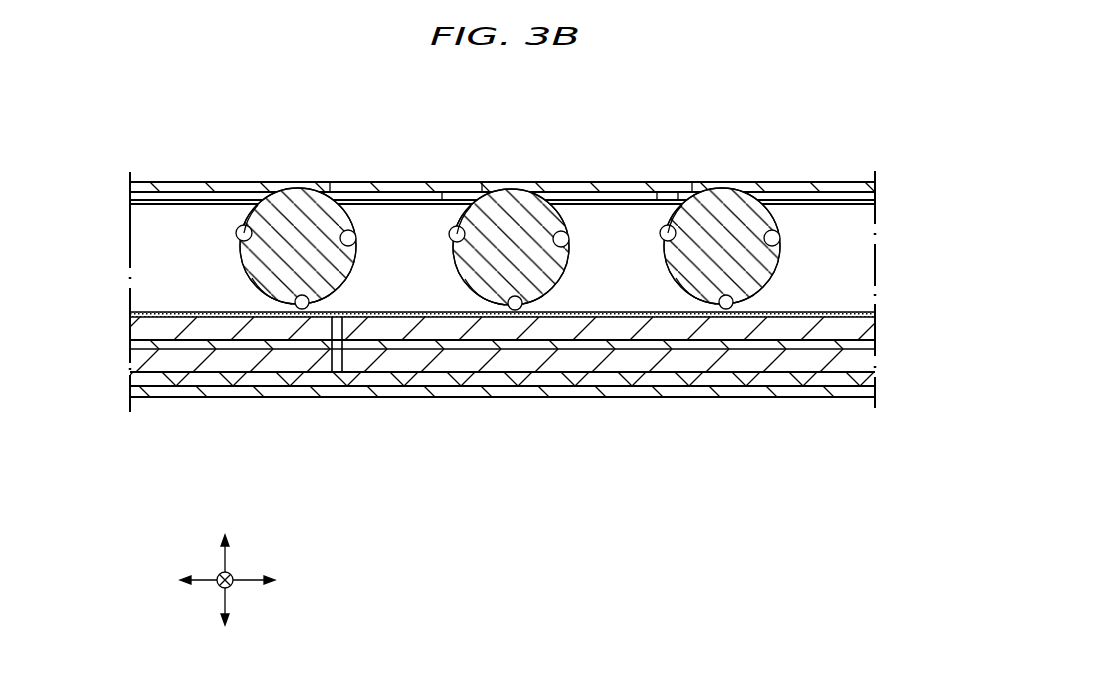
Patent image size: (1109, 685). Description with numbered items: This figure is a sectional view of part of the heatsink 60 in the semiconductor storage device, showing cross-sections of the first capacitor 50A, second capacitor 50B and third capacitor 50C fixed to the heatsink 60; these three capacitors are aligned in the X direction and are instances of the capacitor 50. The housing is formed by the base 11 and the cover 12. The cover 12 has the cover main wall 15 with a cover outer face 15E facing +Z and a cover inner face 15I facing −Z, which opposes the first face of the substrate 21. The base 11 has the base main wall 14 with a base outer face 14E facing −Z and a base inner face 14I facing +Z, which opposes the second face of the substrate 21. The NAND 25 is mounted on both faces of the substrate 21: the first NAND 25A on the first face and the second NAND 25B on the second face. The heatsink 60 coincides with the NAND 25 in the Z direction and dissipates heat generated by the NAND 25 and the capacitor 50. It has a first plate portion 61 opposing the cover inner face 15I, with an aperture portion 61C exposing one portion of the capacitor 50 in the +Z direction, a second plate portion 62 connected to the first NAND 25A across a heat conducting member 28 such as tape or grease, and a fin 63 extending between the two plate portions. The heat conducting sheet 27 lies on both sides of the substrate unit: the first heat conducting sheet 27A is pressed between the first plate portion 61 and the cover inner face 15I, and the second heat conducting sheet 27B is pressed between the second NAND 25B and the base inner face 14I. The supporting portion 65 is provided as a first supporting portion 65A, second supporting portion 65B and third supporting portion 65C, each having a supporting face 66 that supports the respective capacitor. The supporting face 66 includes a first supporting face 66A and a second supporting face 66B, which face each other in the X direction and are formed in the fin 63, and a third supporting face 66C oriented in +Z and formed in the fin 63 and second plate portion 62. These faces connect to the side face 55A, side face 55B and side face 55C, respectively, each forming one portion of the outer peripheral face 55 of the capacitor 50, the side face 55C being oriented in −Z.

The base 11 is at (138, 393).
The cover 12 is at (150, 190).
The base main wall 14 is at (539, 412).
The base outer face 14E is at (862, 402).
The base inner face 14I is at (862, 372).
The cover main wall 15 is at (519, 181).
The cover outer face 15E is at (867, 180).
The cover inner face 15I is at (866, 206).
The substrate 21 is at (135, 347).
The NAND 25 is at (460, 392).
The first NAND 25A is at (137, 327).
The second NAND 25B is at (222, 365).
The heat conducting sheet 27 is at (518, 282).
The first heat conducting sheet 27A is at (657, 200).
The second heat conducting sheet 27B is at (338, 382).
The heat conducting member 28 is at (862, 306).
The capacitor 50 is at (535, 203).
The first capacitor 50A is at (304, 196).
The second capacitor 50B is at (517, 196).
The third capacitor 50C is at (729, 196).
The outer peripheral face 55 is at (489, 387).
The side face 55A is at (258, 283).
The side face 55B is at (352, 276).
The side face 55C is at (286, 303).
The heatsink 60 is at (122, 247).
The first plate portion 61 is at (142, 200).
The aperture portion 61C is at (274, 176).
The second plate portion 62 is at (150, 298).
The fin 63 is at (860, 286).
The supporting portion 65 is at (423, 186).
The first supporting portion 65A is at (224, 228).
The second supporting portion 65B is at (437, 232).
The third supporting portion 65C is at (650, 232).
The supporting face 66 is at (529, 295).
The first supporting face 66A is at (245, 232).
The second supporting face 66B is at (340, 232).
The third supporting face 66C is at (312, 304).